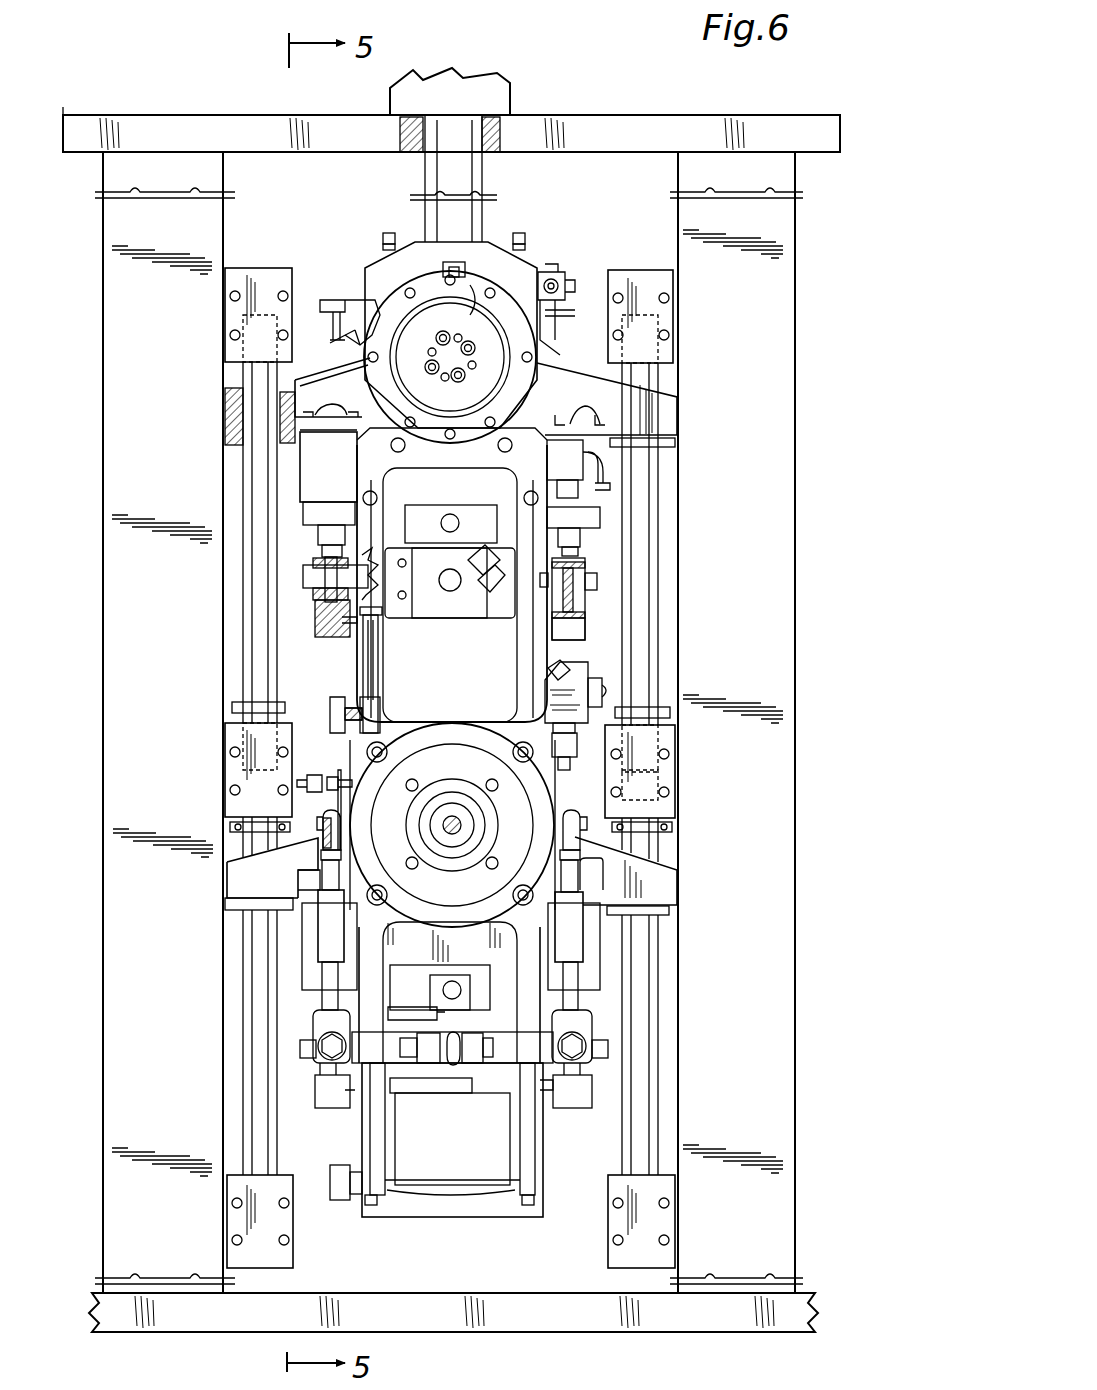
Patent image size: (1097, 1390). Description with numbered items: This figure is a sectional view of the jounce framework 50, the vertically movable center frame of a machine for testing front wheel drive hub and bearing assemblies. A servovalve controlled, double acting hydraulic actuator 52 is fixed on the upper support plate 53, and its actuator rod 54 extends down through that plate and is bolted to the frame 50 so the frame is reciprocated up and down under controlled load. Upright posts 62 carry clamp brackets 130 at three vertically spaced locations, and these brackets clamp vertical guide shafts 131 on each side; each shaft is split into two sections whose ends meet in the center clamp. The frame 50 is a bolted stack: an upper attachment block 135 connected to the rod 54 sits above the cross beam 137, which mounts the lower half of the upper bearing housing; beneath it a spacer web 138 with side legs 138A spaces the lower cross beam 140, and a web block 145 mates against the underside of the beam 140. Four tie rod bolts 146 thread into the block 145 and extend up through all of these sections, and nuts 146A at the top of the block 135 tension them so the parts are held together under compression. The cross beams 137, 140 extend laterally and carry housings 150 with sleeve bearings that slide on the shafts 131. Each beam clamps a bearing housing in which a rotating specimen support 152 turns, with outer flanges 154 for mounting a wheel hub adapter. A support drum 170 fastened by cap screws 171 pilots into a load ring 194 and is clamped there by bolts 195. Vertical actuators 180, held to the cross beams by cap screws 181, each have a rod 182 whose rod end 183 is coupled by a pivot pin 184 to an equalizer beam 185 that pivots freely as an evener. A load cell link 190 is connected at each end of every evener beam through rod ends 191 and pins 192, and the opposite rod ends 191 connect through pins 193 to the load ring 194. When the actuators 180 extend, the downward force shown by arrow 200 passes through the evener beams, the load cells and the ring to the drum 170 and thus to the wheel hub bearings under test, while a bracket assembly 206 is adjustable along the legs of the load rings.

The jounce framework 50 is at (500, 240).
The reciprocating hydraulic actuator 52 is at (514, 92).
The upper support plate 53 is at (598, 118).
The actuator rod 54 is at (480, 172).
The posts 62 is at (780, 690).
The clamp brackets 130 is at (673, 1224).
The vertical guide shafts 131 is at (650, 1040).
The upper attachment block 135 is at (415, 245).
The cross beam guide block 137 is at (640, 410).
The spacer web 138 is at (555, 650).
The side legs 138A is at (500, 650).
The second cross beam 140 is at (630, 880).
The web block 145 is at (470, 1210).
The tie rod bolts 146 is at (526, 240).
The nuts 146A is at (528, 250).
The housings 150 is at (677, 895).
The rotating specimen support 152 is at (490, 352).
The outer flanges 154 is at (472, 300).
The support drum 170 is at (375, 775).
The cap screws 171 is at (420, 870).
The vertical actuators 180 is at (348, 474).
The cap screws 181 is at (298, 872).
The actuator rod 182 is at (580, 540).
The rod end 183 is at (322, 560).
The pivot pin 184 is at (600, 1058).
The equalizer beam 185 is at (598, 1088).
The load-cell-link 190 is at (585, 955).
The rod ends 191 is at (600, 1020).
The pin 192 is at (580, 1085).
The pins 193 is at (605, 812).
The load ring 194 is at (320, 800).
The bolts 195 is at (400, 730).
The arrow 200 is at (335, 690).
The bracket assembly 206 is at (470, 1093).